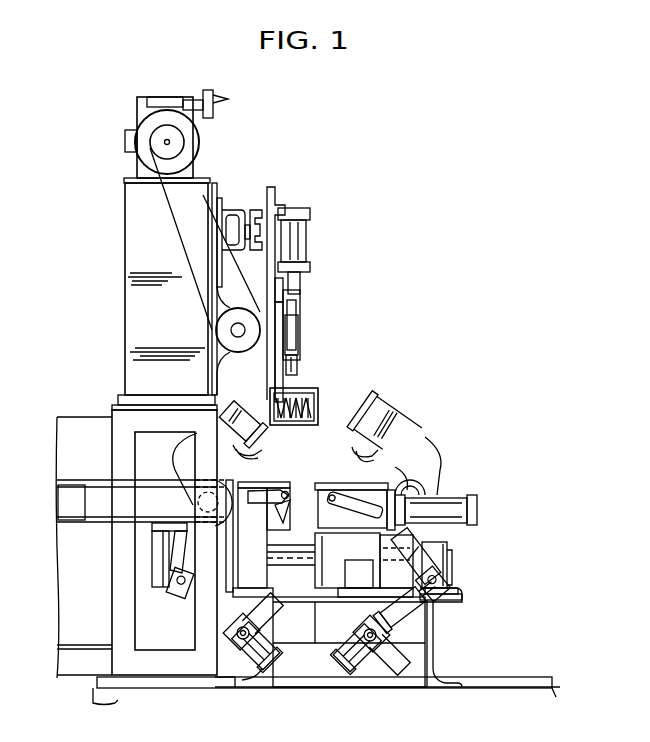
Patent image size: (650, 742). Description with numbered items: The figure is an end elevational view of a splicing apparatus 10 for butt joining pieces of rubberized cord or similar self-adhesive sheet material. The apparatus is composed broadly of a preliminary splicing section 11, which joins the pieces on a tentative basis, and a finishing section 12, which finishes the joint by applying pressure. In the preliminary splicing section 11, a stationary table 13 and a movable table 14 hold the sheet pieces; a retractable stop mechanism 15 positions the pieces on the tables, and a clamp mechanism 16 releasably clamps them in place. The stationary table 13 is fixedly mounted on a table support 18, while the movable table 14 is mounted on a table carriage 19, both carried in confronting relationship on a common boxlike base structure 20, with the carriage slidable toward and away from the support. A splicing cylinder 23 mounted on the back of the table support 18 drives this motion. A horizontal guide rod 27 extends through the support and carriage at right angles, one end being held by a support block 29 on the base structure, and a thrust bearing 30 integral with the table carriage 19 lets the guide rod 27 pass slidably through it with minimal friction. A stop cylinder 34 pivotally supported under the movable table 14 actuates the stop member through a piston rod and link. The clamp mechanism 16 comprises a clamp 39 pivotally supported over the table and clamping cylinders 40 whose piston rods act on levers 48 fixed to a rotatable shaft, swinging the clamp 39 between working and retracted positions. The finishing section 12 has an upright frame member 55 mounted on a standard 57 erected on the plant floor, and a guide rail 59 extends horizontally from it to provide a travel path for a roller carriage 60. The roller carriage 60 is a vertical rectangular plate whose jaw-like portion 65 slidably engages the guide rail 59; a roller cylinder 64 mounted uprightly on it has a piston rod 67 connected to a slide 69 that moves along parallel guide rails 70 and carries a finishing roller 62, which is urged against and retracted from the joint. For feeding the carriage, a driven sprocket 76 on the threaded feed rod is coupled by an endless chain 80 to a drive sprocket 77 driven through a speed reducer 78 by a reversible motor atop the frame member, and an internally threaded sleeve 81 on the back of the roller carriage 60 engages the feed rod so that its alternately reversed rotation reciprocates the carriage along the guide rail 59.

The splicing apparatus 10 is at (376, 212).
The preliminary splicing section 11 is at (473, 438).
The finishing section 12 is at (318, 212).
The stationary table 13 is at (256, 482).
The movable table 14 is at (338, 484).
The retractable stop mechanism 15 is at (299, 496).
The clamp mechanism 16 is at (157, 446).
The table support 18 is at (266, 565).
The table carriage 19 is at (364, 565).
The base structure 20 is at (442, 606).
The splicing cylinder 23 is at (152, 548).
The guide rod 27 is at (296, 602).
The support block 29 is at (447, 572).
The thrust bearing 30 is at (392, 628).
The stop cylinder 34 is at (467, 500).
The clamp 39 is at (245, 405).
The clamping cylinder 40 is at (262, 668).
The lever 48 is at (178, 596).
The upright frame member 55 is at (127, 258).
The standard 57 is at (110, 597).
The guide rail 59 is at (243, 210).
The roller carriage 60 is at (272, 187).
The finishing roller 62 is at (318, 400).
The roller cylinder 64 is at (309, 240).
The jaw-like portion 65 is at (257, 210).
The piston rod 67 is at (300, 280).
The slide 69 is at (300, 331).
The guide rail 70 is at (298, 368).
The driven sprocket 76 is at (226, 330).
The drive sprocket 77 is at (152, 151).
The speed reducer 78 is at (147, 122).
The endless chain 80 is at (166, 196).
The internally threaded sleeve 81 is at (278, 300).